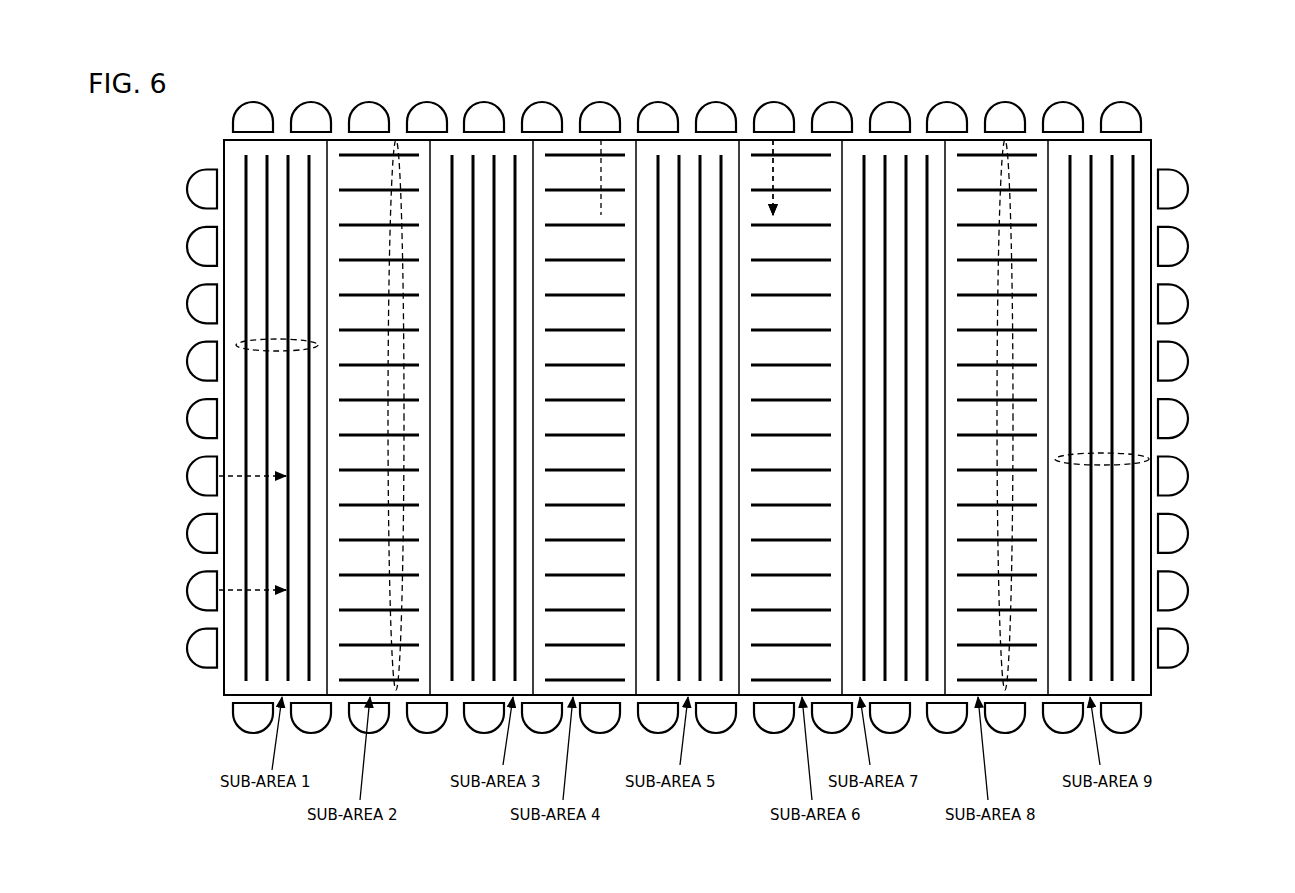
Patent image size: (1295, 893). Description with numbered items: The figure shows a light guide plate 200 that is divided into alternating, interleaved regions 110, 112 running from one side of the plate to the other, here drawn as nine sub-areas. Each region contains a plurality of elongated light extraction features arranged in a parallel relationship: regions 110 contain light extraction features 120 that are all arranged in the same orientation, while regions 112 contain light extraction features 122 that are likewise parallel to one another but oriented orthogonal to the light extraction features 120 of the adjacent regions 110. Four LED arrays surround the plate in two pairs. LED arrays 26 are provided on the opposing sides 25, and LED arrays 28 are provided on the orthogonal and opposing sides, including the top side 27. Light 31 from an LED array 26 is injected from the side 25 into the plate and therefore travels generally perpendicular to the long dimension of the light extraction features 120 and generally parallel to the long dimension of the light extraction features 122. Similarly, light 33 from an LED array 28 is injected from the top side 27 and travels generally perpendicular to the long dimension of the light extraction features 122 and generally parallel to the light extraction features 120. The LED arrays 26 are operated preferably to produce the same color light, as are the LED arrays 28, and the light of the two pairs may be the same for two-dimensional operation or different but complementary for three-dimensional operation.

The light guide plate 200 is at (1245, 90).
The side 25 is at (224, 695).
The LED array 26 is at (190, 240).
The top side 27 is at (1151, 140).
The LED array 28 is at (1078, 108).
The light 31 is at (236, 474).
The light 33 is at (599, 176).
The region 110 is at (278, 160).
The region 112 is at (573, 148).
The light extraction feature 120 is at (240, 345).
The light extraction feature 122 is at (1005, 140).